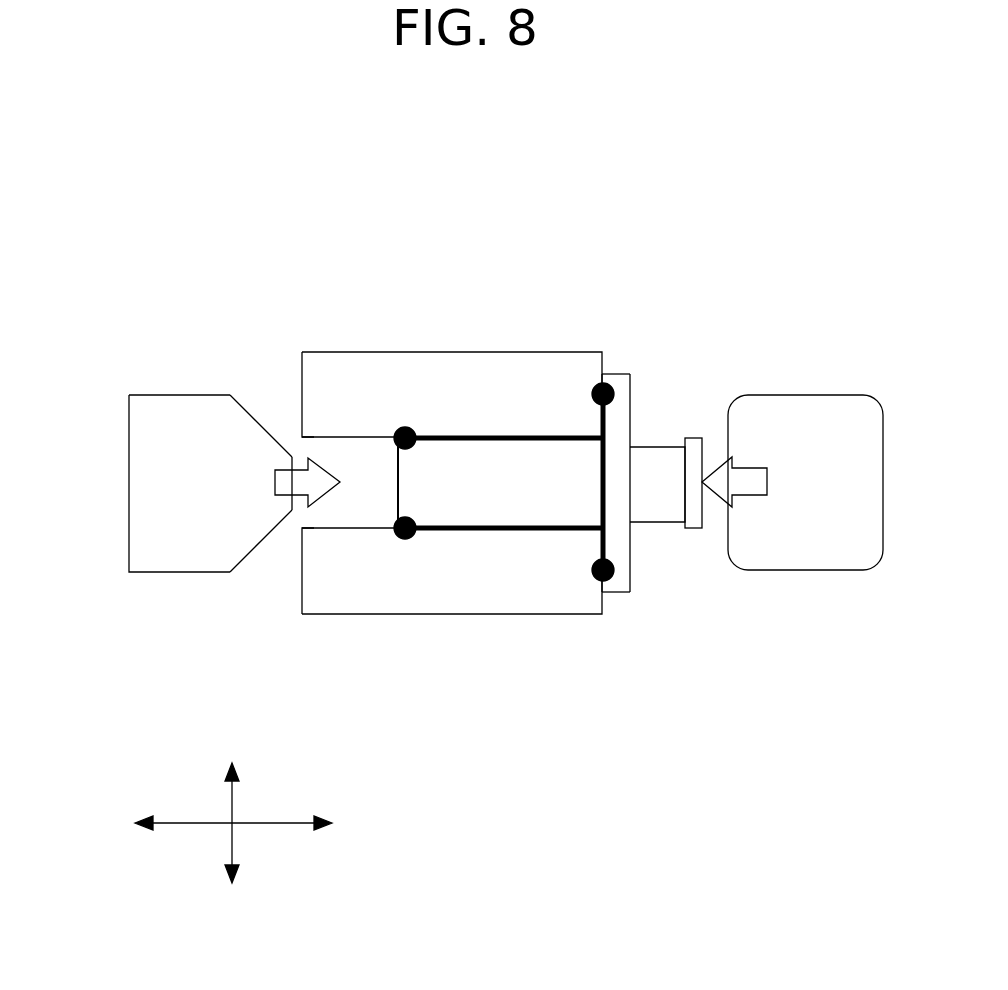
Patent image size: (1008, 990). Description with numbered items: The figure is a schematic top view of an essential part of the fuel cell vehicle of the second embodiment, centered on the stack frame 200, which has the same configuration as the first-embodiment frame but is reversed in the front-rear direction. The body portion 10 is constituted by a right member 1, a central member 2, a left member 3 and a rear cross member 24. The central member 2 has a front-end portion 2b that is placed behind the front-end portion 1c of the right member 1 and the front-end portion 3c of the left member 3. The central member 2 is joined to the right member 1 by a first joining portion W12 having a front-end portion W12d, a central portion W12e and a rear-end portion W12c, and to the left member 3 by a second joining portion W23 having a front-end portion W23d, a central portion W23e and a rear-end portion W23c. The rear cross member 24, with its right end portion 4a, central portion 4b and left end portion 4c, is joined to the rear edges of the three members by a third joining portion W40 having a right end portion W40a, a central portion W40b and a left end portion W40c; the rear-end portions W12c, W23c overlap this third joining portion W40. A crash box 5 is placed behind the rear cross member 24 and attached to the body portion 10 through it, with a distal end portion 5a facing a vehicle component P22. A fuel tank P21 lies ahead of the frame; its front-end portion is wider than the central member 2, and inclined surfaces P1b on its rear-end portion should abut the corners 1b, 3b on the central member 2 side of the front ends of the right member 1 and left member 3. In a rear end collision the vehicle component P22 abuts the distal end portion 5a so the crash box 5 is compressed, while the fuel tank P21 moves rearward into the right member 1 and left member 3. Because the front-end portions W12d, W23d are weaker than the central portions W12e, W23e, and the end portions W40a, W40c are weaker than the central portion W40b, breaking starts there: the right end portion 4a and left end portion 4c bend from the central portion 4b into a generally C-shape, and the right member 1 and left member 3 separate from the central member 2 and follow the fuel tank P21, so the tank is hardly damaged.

The stack frame 200 is at (741, 172).
The right member 1 is at (326, 352).
The corner 1b is at (300, 422).
The front-end portion 1c is at (300, 436).
The central member 2 is at (514, 498).
The front-end portion 2b is at (396, 464).
The left member 3 is at (330, 616).
The corner 3b is at (297, 531).
The front-end portion 3c is at (301, 572).
The body portion 10 is at (512, 352).
The rear cross member 24 is at (631, 383).
The right end portion 4a is at (617, 373).
The central portion 4b is at (632, 475).
The left end portion 4c is at (625, 593).
The crash box 5 is at (647, 512).
The distal end portion 5a is at (692, 437).
The fuel tank P21 is at (165, 395).
The vehicle component P22 is at (805, 394).
The inclined surfaces P1b is at (264, 428).
The first joining portion W12 is at (440, 435).
The rear-end portion W12c is at (599, 434).
The front-end portion W12d is at (404, 427).
The central portion W12e is at (461, 435).
The second joining portion W23 is at (435, 533).
The rear-end portion W23c is at (599, 531).
The front-end portion W23d is at (404, 539).
The central portion W23e is at (460, 532).
The third joining portion W40 is at (607, 515).
The right end portion W40a is at (599, 384).
The central portion W40b is at (607, 481).
The left end portion W40c is at (600, 579).